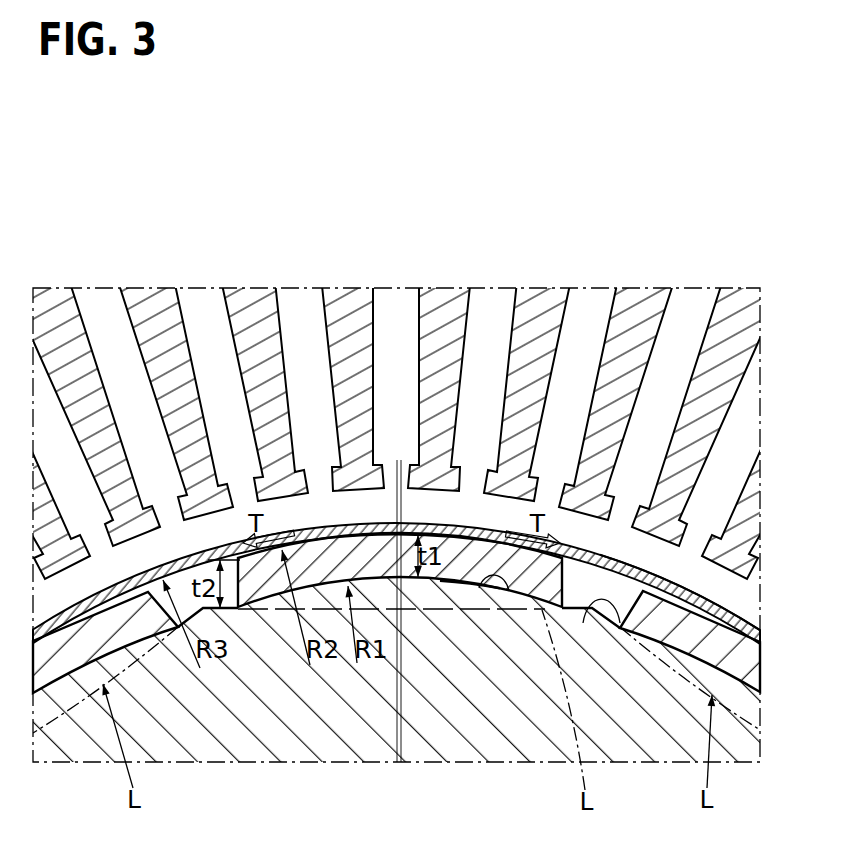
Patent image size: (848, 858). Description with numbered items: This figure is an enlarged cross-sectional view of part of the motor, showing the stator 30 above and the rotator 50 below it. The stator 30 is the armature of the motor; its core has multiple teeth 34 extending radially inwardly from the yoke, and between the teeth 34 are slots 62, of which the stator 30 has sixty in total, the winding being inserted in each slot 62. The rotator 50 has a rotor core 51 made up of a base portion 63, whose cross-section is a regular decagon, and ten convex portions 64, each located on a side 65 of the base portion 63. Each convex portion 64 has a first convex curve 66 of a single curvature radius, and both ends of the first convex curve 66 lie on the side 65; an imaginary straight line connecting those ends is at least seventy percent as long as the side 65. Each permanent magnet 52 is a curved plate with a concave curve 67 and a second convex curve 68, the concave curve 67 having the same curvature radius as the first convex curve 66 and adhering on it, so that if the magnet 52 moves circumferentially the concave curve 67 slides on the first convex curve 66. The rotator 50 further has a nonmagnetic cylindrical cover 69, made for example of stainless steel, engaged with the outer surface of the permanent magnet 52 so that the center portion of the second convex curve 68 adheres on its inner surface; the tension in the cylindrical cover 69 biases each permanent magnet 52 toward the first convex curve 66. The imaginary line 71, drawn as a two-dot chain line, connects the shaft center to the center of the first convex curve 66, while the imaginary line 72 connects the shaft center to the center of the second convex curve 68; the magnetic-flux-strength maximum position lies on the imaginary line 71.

The stator 30 is at (424, 320).
The teeth 34 is at (343, 408).
The rotator 50 is at (87, 766).
The rotor core 51 is at (400, 689).
The permanent magnet 52 is at (750, 667).
The slot 62 is at (396, 313).
The base portion 63 is at (367, 713).
The convex portion 64 is at (423, 592).
The side 65 is at (620, 626).
The first convex curve 66 is at (508, 588).
The concave curve 67 is at (469, 590).
The second convex curve 68 is at (463, 538).
The cylindrical cover 69 is at (727, 612).
The imaginary line 71 is at (370, 487).
The imaginary line 72 is at (434, 488).